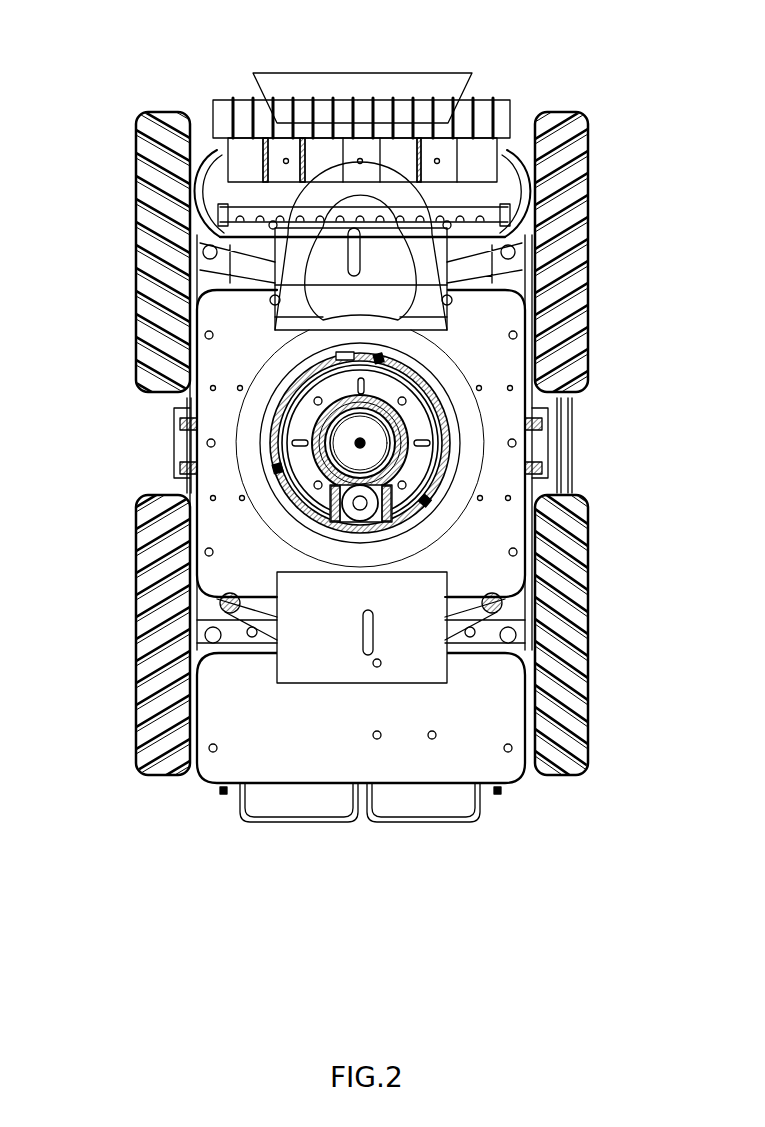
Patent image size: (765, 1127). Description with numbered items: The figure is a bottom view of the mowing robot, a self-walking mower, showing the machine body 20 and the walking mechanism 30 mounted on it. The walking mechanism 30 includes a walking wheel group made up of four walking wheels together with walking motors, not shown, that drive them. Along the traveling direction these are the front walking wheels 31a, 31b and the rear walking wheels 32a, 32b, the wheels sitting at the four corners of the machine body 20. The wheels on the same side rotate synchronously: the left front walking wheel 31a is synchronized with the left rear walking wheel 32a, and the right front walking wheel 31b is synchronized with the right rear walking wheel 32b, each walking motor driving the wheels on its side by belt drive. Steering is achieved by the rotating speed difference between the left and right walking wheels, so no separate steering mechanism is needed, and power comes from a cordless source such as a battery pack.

The machine body 20 is at (217, 182).
The walking mechanism 30 is at (122, 226).
The left front walking wheel 31a is at (585, 256).
The right front walking wheel 31b is at (137, 292).
The left rear walking wheel 32a is at (587, 607).
The right rear walking wheel 32b is at (140, 642).